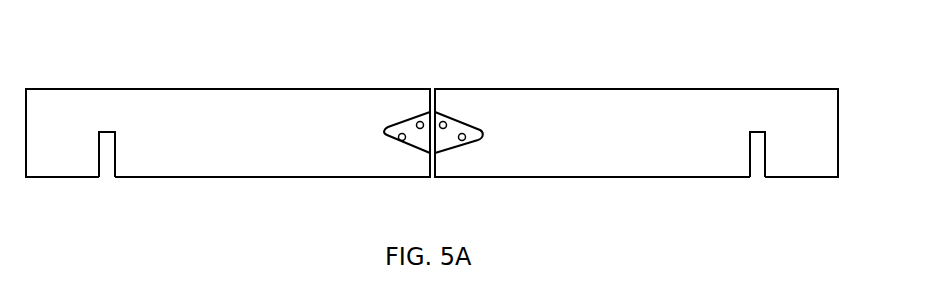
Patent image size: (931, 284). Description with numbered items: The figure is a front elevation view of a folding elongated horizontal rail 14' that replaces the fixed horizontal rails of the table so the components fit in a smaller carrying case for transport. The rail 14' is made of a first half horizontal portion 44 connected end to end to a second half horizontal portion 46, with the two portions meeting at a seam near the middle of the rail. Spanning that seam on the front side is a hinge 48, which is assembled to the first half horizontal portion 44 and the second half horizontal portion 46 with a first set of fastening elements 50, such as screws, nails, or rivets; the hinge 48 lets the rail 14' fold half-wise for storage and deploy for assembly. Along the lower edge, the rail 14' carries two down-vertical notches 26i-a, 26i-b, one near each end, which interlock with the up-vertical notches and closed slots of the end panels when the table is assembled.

The folding elongated horizontal rail 14' is at (432, 111).
The first half horizontal portion 44 is at (258, 89).
The second half horizontal portion 46 is at (617, 89).
The hinge 48 is at (386, 135).
The first set of fastening elements 50 is at (465, 134).
The down-vertical notch 26i-a is at (128, 149).
The down-vertical notch 26i-b is at (731, 149).